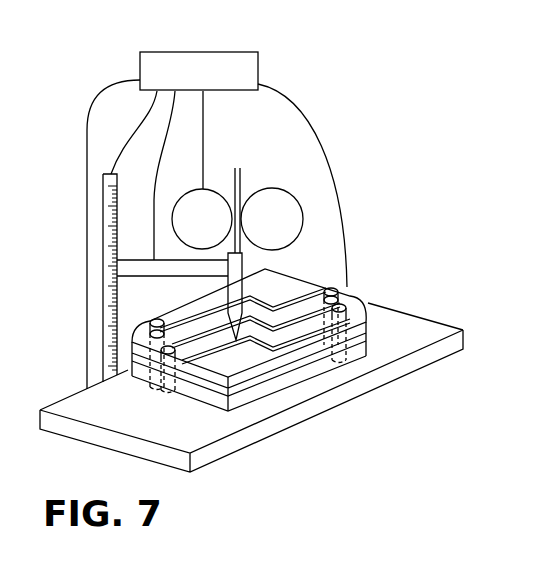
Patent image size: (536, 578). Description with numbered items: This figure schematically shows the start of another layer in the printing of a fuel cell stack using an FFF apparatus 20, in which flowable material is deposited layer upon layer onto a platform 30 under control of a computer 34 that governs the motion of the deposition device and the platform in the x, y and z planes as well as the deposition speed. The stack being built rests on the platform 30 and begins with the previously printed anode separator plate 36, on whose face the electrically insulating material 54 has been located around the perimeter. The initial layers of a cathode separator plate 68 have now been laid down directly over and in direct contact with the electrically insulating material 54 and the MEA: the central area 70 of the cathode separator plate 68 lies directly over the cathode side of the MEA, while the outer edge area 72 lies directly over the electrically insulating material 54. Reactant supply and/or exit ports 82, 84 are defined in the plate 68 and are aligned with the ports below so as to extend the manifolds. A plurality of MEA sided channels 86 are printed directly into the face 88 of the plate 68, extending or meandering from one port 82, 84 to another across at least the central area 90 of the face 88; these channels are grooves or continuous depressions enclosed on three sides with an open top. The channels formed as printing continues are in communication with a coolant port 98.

The FFF apparatus 20 is at (350, 70).
The platform 30 is at (214, 452).
The computer 34 is at (246, 52).
The anode separator plate 36 is at (243, 392).
The electrically insulating material 54 is at (360, 335).
The cathode separator plate 68 is at (294, 356).
The central area 70 is at (262, 278).
The outer edge area 72 is at (362, 294).
The reactant supply and/or exit port 82 is at (155, 321).
The reactant supply and/or exit port 84 is at (171, 391).
The MEA sided channels 86 is at (197, 314).
The face 88 is at (238, 366).
The central area 90 is at (209, 293).
The coolant port 98 is at (151, 336).